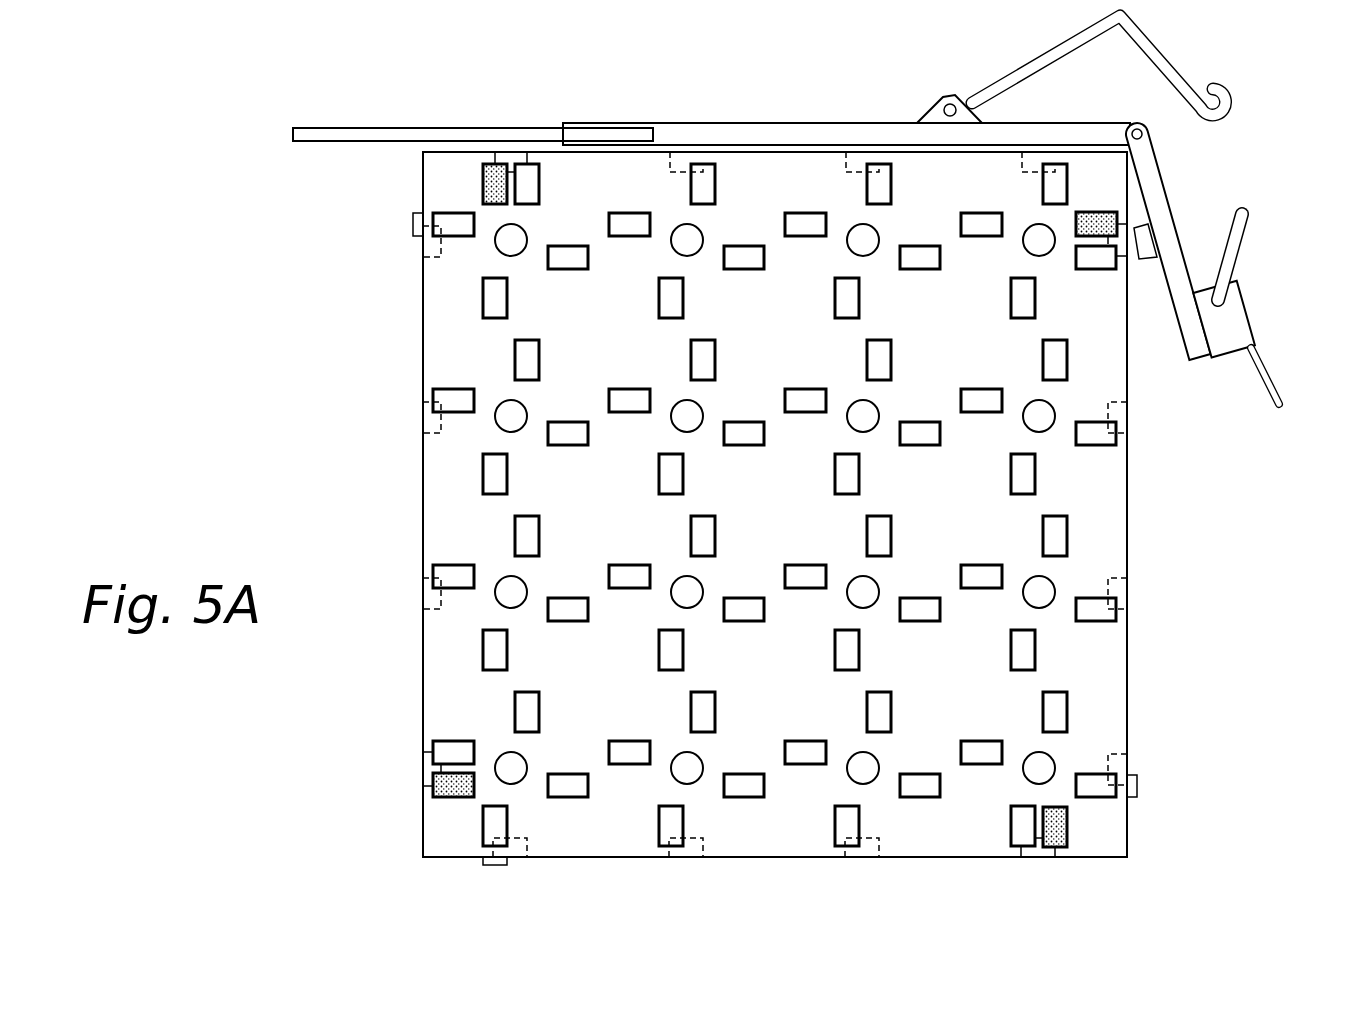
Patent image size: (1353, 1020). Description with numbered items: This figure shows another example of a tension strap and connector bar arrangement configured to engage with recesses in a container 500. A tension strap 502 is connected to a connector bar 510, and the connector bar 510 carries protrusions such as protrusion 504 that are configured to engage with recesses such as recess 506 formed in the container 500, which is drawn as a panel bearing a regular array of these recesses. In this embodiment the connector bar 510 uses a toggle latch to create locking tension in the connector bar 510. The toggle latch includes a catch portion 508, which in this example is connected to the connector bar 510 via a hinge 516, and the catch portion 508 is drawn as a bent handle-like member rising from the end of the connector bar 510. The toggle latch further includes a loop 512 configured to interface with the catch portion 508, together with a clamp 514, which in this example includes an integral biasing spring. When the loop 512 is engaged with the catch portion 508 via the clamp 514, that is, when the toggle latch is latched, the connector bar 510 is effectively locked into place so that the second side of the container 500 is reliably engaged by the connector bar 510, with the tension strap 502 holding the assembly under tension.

The container 500 is at (222, 294).
The tension strap 502 is at (441, 128).
The protrusion 504 is at (863, 152).
The recess 506 is at (505, 420).
The catch portion 508 is at (1218, 90).
The connector bar 510 is at (753, 123).
The loop 512 is at (1243, 237).
The clamp 514 is at (1252, 318).
The hinge 516 is at (950, 103).